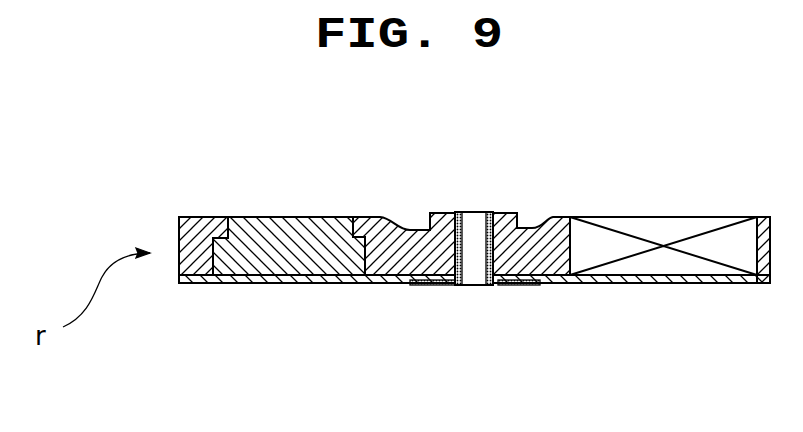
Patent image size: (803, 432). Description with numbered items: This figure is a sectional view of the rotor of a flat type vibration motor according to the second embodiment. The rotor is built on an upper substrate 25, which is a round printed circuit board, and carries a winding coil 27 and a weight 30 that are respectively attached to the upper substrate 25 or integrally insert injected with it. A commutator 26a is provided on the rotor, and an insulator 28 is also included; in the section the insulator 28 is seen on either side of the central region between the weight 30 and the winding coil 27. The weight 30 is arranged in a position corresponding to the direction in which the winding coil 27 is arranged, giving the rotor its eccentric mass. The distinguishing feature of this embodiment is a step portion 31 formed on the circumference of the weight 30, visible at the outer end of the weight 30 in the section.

The upper substrate 25 is at (583, 287).
The commutator 26a is at (427, 287).
The winding coil 27 is at (675, 222).
The insulator 28 is at (395, 220).
The weight 30 is at (266, 228).
The step portion 31 is at (220, 238).